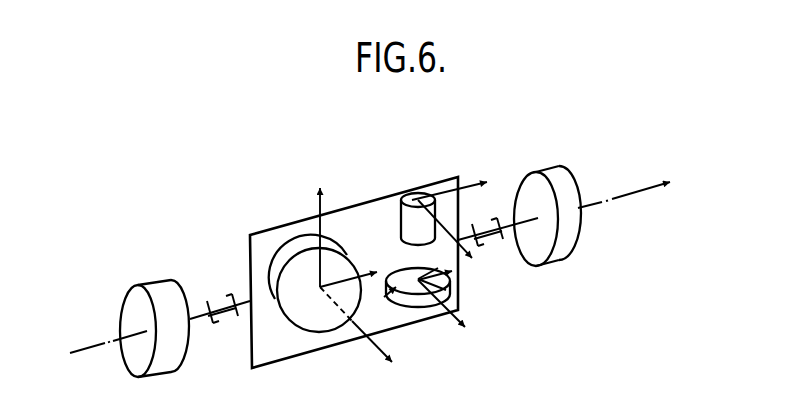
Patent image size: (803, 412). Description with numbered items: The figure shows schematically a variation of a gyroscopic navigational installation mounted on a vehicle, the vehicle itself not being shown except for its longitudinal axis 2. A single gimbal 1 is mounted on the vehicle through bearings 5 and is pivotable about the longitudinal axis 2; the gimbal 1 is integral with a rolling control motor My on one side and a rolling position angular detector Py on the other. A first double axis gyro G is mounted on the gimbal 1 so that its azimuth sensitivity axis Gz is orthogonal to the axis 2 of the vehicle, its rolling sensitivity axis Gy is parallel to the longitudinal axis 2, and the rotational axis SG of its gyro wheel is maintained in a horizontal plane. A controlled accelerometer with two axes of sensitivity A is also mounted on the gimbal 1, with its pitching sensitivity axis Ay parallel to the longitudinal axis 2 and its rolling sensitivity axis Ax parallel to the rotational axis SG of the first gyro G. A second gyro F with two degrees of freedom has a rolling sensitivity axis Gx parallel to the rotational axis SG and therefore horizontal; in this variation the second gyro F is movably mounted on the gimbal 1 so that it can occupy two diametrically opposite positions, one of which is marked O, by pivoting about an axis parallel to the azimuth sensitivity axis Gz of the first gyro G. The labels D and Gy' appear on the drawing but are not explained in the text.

The gimbal 1 is at (366, 201).
The longitudinal axis 2 is at (619, 203).
The bearings 5 is at (224, 306).
The first double axis gyro G is at (289, 321).
The controlled accelerometer with two axes of sensitivity A is at (408, 193).
The second gyro F is at (425, 307).
The diameter D is at (384, 307).
The position O is at (436, 270).
The rolling control motor My is at (139, 357).
The rolling position angular detector Py is at (547, 255).
The azimuth sensitivity axis Gz is at (319, 223).
The rolling sensitivity axis Gy is at (351, 264).
The rolling sensitivity axis Gx is at (458, 322).
The rotational axis SG is at (369, 337).
The pitching sensitivity axis Ay is at (455, 179).
The rolling sensitivity axis Ax is at (459, 243).
The axis Gy' is at (458, 296).